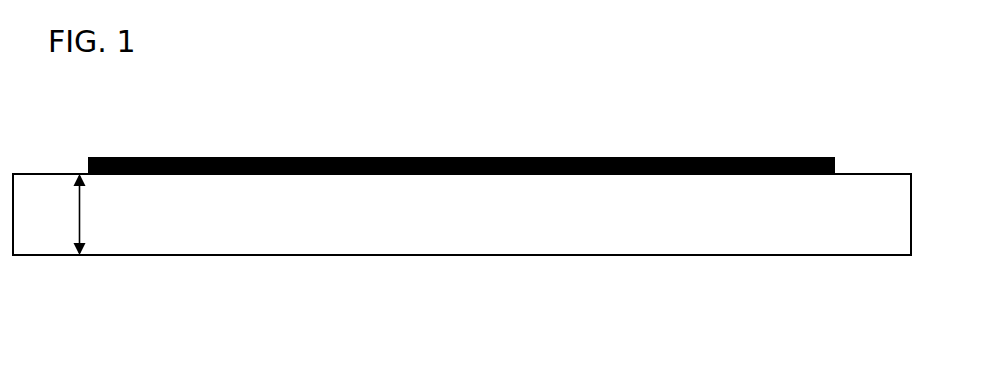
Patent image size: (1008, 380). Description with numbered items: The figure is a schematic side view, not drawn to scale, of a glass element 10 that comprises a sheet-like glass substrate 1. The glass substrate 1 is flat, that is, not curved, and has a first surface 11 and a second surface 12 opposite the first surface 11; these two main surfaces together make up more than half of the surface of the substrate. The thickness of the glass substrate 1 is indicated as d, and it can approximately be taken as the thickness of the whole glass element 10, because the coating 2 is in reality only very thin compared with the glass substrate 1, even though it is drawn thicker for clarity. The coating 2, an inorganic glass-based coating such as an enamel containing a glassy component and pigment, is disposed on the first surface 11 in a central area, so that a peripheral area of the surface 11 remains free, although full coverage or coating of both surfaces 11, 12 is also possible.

The glass element 10 is at (482, 46).
The sheet-like glass substrate 1 is at (232, 240).
The coating 2 is at (232, 156).
The first surface 11 is at (864, 174).
The second surface 12 is at (862, 255).
The thickness of the glass substrate d is at (94, 215).